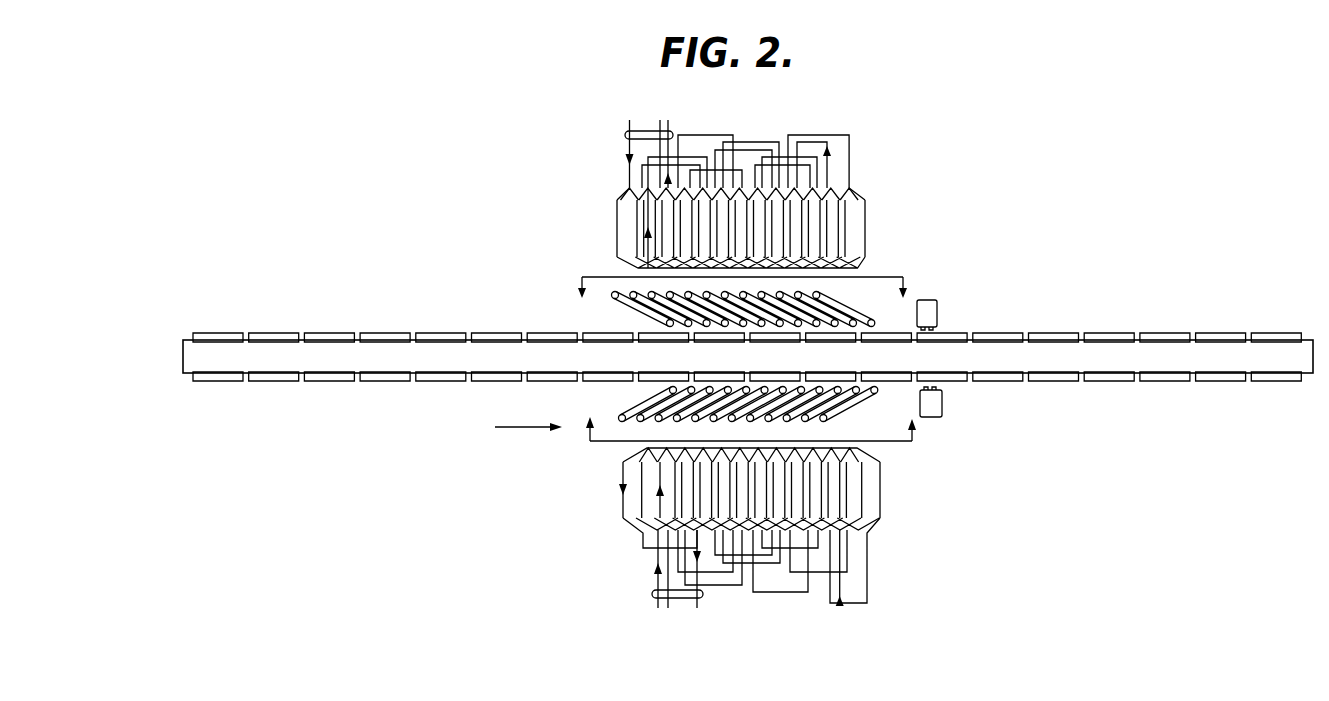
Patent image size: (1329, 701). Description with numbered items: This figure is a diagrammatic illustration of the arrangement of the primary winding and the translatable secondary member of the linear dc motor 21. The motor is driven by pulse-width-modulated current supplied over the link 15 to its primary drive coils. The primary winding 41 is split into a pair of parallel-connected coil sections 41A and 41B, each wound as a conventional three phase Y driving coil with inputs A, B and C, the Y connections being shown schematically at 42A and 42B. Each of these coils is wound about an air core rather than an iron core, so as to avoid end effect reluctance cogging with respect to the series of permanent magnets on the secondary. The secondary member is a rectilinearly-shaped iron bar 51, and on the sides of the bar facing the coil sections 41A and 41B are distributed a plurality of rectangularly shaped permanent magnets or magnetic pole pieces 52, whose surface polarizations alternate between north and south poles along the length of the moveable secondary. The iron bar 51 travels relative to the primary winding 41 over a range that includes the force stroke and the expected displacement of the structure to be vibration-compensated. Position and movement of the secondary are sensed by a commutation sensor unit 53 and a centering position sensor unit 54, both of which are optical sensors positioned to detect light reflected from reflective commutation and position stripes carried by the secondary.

The link 15 is at (625, 136).
The linear dc motor 21 is at (542, 481).
The primary winding 41 is at (596, 286).
The coil section 41A is at (860, 408).
The coil section 41B is at (846, 305).
The three phase Y driving coil connection 42A is at (623, 522).
The three phase Y driving coil connection 42B is at (873, 217).
The iron bar 51 is at (475, 366).
The permanent magnets 52 is at (258, 381).
The commutation sensor unit 53 is at (943, 411).
The centering position sensor unit 54 is at (938, 300).